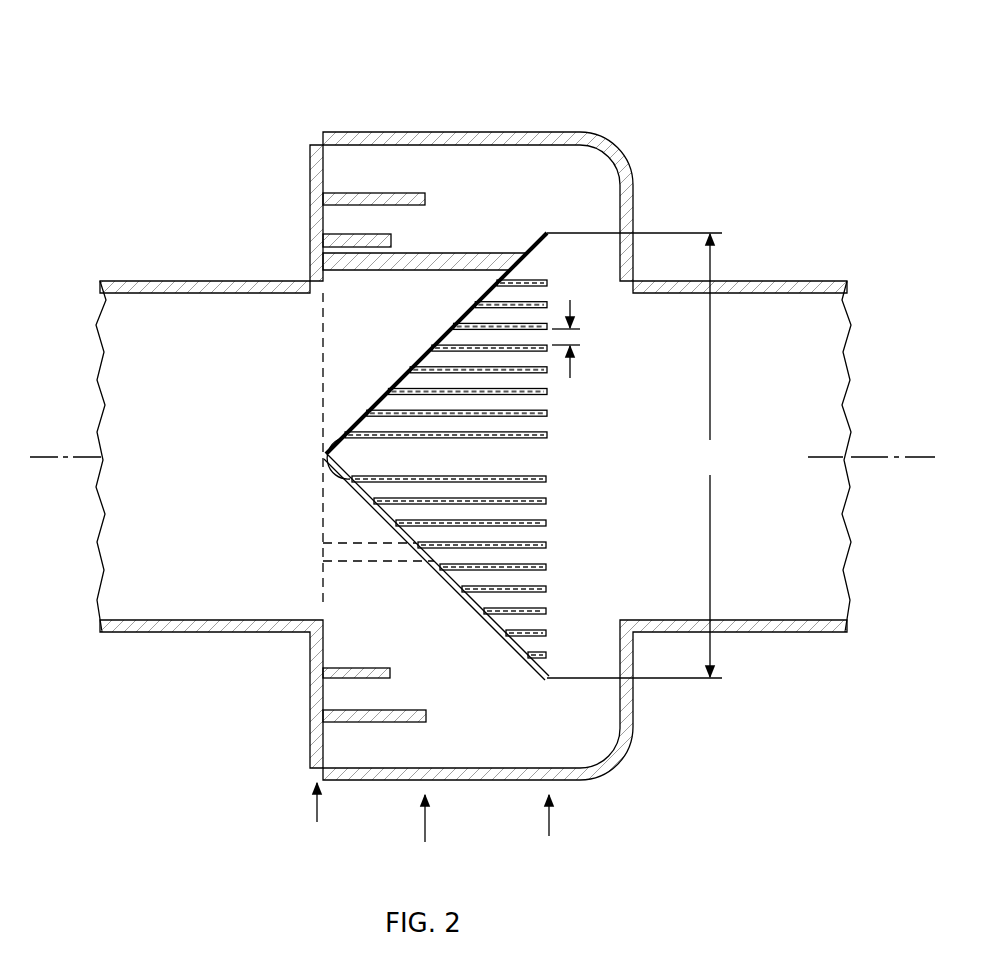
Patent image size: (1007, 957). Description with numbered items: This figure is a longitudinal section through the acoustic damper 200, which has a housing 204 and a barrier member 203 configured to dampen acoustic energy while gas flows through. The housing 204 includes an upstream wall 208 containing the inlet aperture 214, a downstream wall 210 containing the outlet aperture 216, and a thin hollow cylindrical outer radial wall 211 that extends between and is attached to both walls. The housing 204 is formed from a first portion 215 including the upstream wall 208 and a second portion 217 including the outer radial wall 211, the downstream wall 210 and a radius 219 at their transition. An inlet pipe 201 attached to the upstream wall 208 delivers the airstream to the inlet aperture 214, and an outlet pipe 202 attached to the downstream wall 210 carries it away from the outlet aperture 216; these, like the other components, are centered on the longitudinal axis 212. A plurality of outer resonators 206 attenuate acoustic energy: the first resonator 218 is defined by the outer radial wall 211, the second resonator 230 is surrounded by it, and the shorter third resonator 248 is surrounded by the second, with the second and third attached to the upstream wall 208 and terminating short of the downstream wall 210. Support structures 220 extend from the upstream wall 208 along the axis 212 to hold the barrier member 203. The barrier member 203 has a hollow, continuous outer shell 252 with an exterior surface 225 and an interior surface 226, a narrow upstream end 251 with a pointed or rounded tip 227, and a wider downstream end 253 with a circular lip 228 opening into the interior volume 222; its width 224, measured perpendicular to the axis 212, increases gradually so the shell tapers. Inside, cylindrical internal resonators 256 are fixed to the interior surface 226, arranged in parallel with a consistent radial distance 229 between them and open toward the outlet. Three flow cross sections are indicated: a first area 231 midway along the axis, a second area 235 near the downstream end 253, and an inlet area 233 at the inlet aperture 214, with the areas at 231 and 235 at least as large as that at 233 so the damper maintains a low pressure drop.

The acoustic damper 200 is at (476, 430).
The inlet pipe 201 is at (137, 281).
The outlet pipe 202 is at (793, 281).
The barrier member 203 is at (468, 484).
The housing 204 is at (473, 317).
The resonators 206 is at (417, 167).
The upstream wall 208 is at (318, 665).
The downstream wall 210 is at (647, 233).
The outer radial wall 211 is at (550, 132).
The longitudinal axis 212 is at (880, 460).
The inlet aperture 214 is at (164, 463).
The first portion 215 is at (251, 393).
The outlet aperture 216 is at (852, 411).
The second portion 217 is at (825, 116).
The first resonator 218 is at (476, 781).
The radius 219 is at (613, 160).
The support structure 220 is at (382, 271).
The interior volume 222 is at (553, 457).
The width 224 is at (713, 455).
The exterior surface 225 is at (352, 496).
The interior surface 226 is at (404, 530).
The tip 227 is at (327, 462).
The lip 228 is at (546, 681).
The radial distance 229 is at (570, 378).
The second resonator 230 is at (426, 715).
The first area 231 is at (425, 830).
The inlet area 233 is at (317, 808).
The second area 235 is at (549, 824).
The third resonator 248 is at (392, 672).
The upstream end 251 is at (325, 457).
The outer shell 252 is at (442, 564).
The downstream end 253 is at (549, 434).
The internal resonators 256 is at (549, 481).